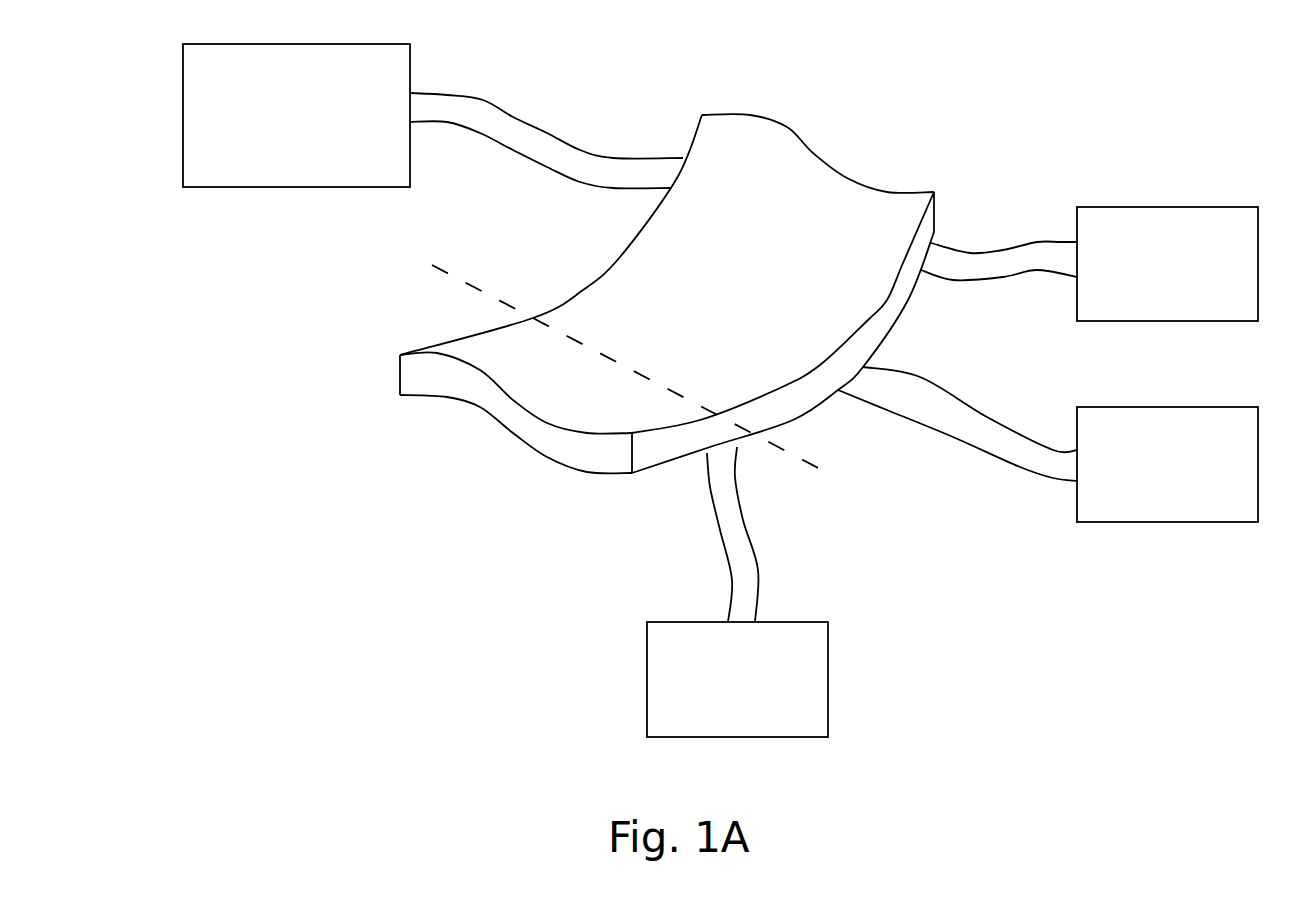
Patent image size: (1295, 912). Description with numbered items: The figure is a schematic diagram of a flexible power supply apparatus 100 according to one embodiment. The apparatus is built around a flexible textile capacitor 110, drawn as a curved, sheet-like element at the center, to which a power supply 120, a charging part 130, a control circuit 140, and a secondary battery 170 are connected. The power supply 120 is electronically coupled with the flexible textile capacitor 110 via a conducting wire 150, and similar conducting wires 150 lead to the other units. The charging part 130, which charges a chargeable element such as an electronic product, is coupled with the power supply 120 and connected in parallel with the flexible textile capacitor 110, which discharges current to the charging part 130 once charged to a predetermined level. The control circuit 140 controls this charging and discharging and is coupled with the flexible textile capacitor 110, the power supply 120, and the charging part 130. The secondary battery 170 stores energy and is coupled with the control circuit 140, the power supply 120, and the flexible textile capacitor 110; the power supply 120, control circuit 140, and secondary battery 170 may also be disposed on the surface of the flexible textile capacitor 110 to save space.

The flexible power supply apparatus 100 is at (318, 517).
The flexible textile capacitor 110 is at (818, 155).
The power supply 120 is at (200, 115).
The charging part 130 is at (1167, 217).
The control circuit 140 is at (1168, 508).
The conducting wire 150 is at (570, 157).
The secondary battery 170 is at (657, 678).